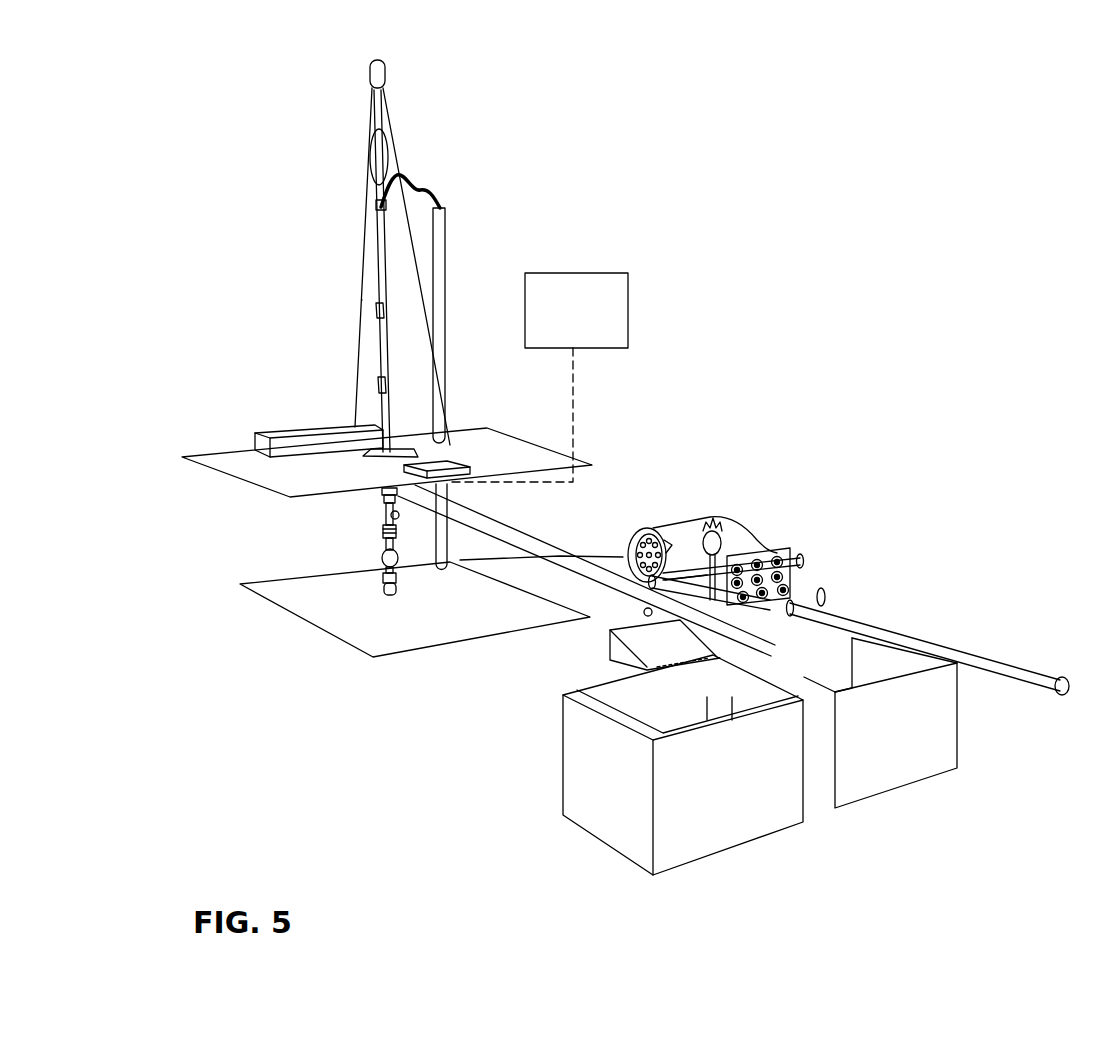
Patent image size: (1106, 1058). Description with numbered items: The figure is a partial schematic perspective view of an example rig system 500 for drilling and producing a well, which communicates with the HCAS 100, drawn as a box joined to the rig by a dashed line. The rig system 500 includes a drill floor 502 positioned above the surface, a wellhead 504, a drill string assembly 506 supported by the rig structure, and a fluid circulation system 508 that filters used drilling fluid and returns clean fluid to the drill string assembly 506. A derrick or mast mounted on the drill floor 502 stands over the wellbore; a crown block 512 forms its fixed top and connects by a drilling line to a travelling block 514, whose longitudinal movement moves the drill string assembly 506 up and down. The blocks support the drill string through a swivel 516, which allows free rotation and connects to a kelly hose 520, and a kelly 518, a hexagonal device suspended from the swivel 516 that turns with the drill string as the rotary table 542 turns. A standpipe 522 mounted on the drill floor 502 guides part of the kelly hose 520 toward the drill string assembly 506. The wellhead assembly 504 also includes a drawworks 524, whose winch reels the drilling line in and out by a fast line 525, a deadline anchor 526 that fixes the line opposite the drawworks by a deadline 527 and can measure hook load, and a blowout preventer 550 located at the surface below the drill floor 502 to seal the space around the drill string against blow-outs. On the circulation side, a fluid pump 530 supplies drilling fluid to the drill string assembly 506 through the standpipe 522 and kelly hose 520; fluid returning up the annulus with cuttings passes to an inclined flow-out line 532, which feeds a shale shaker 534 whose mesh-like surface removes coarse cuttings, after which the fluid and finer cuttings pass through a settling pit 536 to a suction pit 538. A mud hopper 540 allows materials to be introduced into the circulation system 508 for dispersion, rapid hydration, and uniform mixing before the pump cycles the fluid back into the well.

The HCAS 100 is at (630, 307).
The rig system 500 is at (677, 90).
The drill floor 502 is at (233, 465).
The wellhead 504 is at (390, 596).
The drill string assembly 506 is at (447, 118).
The fluid circulation system 508 is at (925, 509).
The crown block 512 is at (370, 72).
The travelling block 514 is at (370, 147).
The swivel 516 is at (378, 207).
The kelly 518 is at (377, 240).
The kelly hose 520 is at (408, 182).
The standpipe 522 is at (447, 282).
The drawworks 524 is at (335, 427).
The fast line 525 is at (363, 300).
The deadline anchor 526 is at (432, 460).
The deadline 527 is at (420, 252).
The fluid pump 530 is at (762, 545).
The flow-out line 532 is at (513, 530).
The shale shaker 534 is at (677, 680).
The settling pit 536 is at (575, 775).
The suction pit 538 is at (952, 665).
The mud hopper 540 is at (738, 522).
The rotary table 542 is at (400, 450).
The blowout preventer 550 is at (382, 558).